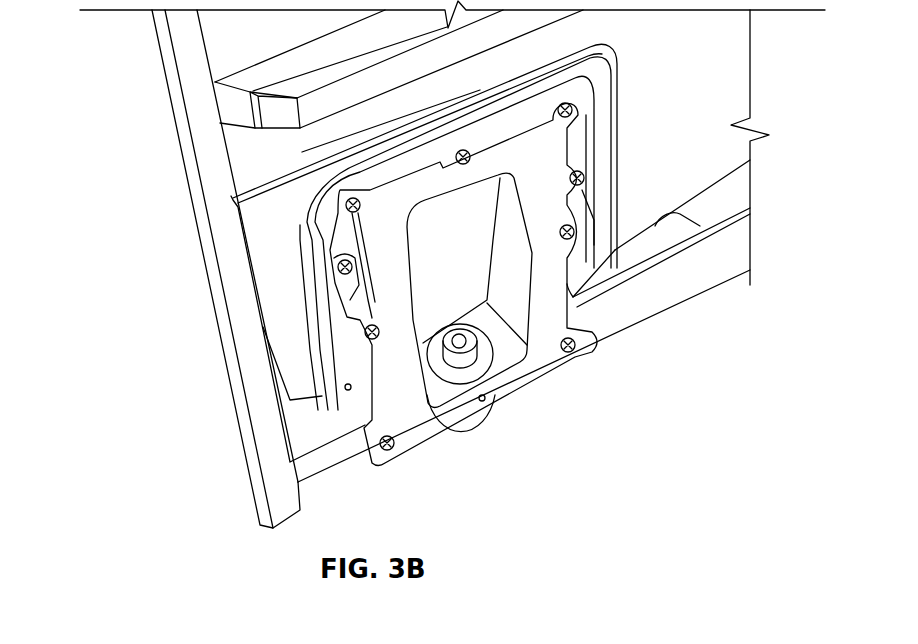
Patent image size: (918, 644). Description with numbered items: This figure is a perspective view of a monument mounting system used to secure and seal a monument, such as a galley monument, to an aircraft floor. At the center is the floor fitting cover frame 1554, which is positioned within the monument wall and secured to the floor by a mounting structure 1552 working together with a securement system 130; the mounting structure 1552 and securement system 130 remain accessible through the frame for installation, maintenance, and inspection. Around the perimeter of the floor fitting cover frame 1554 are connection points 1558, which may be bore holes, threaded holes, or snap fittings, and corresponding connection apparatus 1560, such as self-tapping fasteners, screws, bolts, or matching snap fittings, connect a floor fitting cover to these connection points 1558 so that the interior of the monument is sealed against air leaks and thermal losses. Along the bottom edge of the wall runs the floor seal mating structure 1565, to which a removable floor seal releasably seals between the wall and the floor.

The securement system 130 is at (477, 362).
The mounting structure 1552 is at (408, 418).
The floor fitting cover frame 1554 is at (600, 138).
The connection point 1558 is at (343, 267).
The connection apparatus 1560 is at (336, 274).
The floor seal mating structure 1565 is at (735, 190).